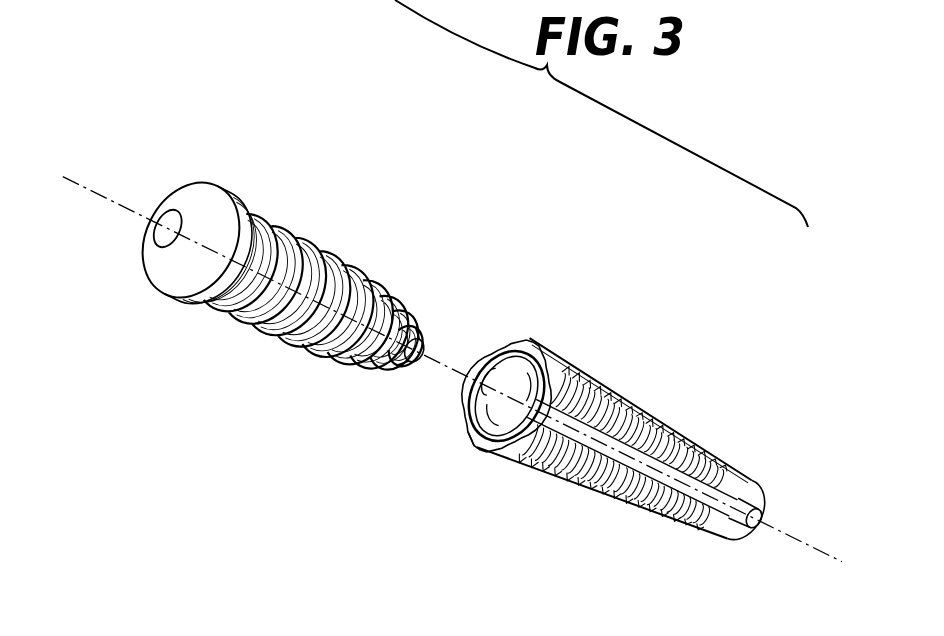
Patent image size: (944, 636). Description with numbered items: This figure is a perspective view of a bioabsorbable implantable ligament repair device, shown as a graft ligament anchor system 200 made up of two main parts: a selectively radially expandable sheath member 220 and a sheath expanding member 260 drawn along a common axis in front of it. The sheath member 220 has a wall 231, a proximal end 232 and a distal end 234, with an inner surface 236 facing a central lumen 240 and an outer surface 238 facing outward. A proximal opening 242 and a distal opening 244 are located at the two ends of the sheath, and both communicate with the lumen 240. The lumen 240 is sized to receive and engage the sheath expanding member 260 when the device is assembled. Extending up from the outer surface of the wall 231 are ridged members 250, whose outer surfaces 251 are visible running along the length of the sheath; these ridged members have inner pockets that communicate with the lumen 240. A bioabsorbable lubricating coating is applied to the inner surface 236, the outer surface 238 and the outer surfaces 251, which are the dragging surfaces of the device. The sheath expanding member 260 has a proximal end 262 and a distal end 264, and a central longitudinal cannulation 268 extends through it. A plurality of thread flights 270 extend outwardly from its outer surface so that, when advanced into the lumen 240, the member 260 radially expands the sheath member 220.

The graft ligament anchor system 200 is at (548, 208).
The selectively radially expandable sheath member 220 is at (687, 335).
The wall 231 is at (460, 394).
The proximal end 232 is at (500, 343).
The distal end 234 is at (752, 478).
The inner surface 236 is at (474, 438).
The outer surface 238 is at (648, 416).
The central lumen 240 is at (505, 407).
The proximal opening 242 is at (492, 380).
The distal opening 244 is at (742, 532).
The ridged members 250 is at (613, 402).
The outer surfaces 251 is at (630, 488).
The sheath expanding member 260 is at (186, 345).
The proximal end 262 is at (180, 200).
The distal end 264 is at (416, 336).
The central longitudinal cannulation 268 is at (158, 236).
The thread flights 270 is at (257, 213).